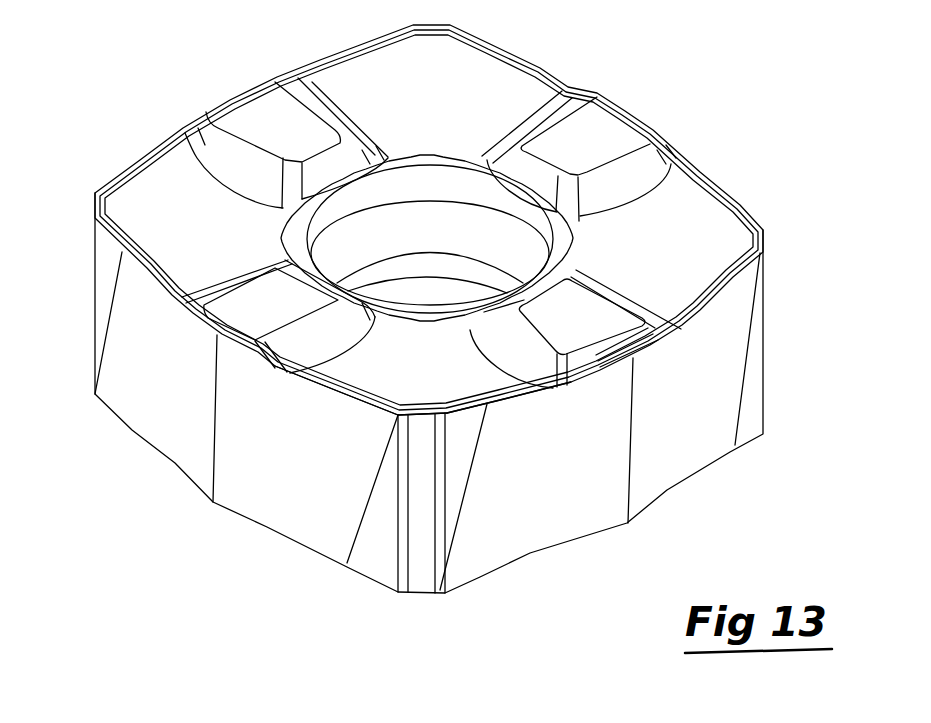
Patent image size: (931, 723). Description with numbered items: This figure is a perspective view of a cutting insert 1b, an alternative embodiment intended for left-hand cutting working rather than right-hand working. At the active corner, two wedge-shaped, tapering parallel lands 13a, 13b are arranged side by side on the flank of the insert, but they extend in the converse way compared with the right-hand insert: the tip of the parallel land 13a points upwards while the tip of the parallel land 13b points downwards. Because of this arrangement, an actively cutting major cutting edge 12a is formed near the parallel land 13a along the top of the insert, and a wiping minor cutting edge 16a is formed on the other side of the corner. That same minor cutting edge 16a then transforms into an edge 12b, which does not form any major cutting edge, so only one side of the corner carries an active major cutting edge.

The cutting insert 1b is at (722, 120).
The major cutting edge 12a is at (362, 398).
The edge 12b is at (527, 400).
The minor cutting edge 16a is at (467, 410).
The parallel land 13a is at (382, 497).
The parallel land 13b is at (457, 488).